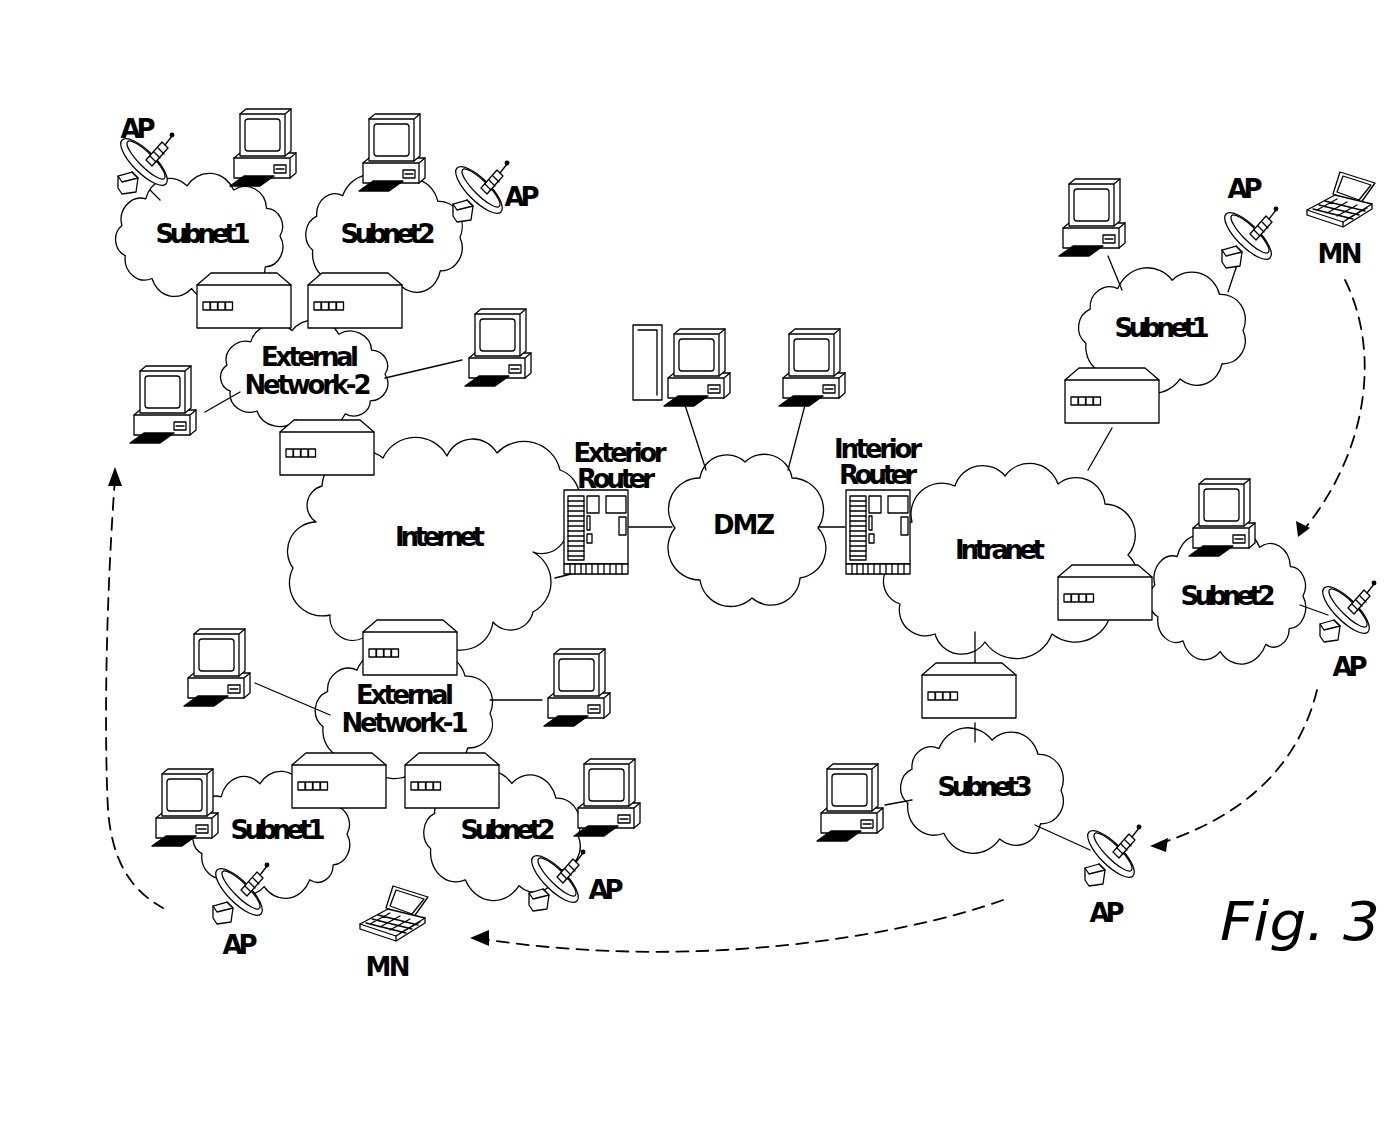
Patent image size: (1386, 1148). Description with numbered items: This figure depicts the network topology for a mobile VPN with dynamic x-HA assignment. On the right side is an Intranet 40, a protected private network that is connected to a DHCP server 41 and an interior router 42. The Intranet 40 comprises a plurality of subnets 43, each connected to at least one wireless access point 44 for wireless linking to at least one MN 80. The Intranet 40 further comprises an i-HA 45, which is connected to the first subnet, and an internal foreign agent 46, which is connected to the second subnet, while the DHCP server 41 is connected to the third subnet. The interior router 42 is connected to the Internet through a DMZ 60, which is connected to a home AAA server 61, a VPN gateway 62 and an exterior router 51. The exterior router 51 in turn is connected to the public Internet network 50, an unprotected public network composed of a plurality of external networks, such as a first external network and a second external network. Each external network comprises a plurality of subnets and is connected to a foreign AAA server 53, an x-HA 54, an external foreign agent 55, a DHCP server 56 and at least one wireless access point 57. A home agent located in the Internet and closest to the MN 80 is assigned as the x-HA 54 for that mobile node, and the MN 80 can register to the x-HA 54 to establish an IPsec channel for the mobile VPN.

The Intranet 40 is at (985, 470).
The DHCP server 41 is at (834, 796).
The interior router 42 is at (850, 575).
The subnets 43 is at (1092, 325).
The wireless access point (WAP) 44 is at (1224, 256).
The i-HA 45 is at (1084, 205).
The internal foreign agent (i-FA) 46 is at (1230, 480).
The public Internet network 50 is at (290, 522).
The exterior router 51 is at (615, 557).
The foreign AAA server (AAAF) 53 is at (148, 444).
The x-HA 54 is at (535, 362).
The external foreign agent (x-FA) 55 is at (298, 134).
The DHCP server 56 is at (430, 142).
The WAP 57 is at (118, 194).
The DMZ (demilitarized zone) 60 is at (712, 598).
The home AAA server (AAAH) 61 is at (822, 342).
The VPN gateway 62 is at (633, 352).
The MN 80 is at (1340, 185).